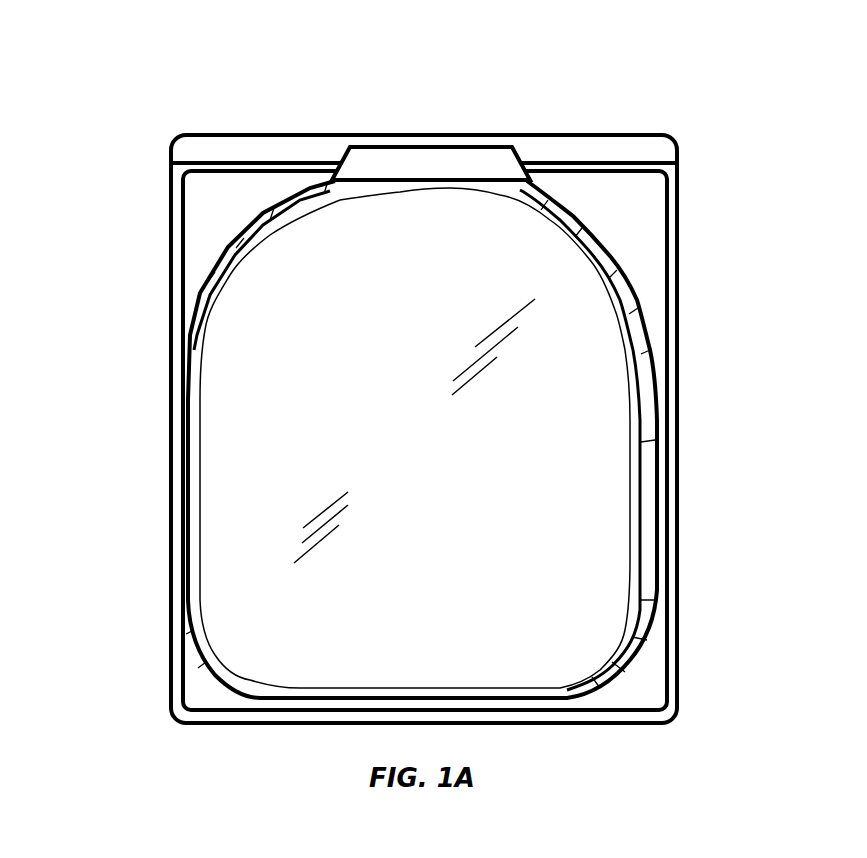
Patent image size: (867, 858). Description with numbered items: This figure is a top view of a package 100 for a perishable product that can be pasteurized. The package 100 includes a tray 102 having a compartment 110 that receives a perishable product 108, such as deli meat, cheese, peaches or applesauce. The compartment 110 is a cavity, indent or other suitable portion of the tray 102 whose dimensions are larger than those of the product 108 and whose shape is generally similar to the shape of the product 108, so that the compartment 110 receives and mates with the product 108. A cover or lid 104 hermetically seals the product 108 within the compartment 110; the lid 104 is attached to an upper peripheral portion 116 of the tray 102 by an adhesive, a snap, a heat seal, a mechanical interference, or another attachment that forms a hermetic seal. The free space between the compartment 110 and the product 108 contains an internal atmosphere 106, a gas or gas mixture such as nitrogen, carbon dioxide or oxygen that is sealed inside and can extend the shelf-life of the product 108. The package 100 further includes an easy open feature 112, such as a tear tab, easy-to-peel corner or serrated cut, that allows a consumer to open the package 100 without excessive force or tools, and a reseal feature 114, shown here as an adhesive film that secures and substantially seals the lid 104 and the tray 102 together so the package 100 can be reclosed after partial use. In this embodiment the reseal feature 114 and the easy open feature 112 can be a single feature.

The package 100 is at (597, 108).
The tray 102 is at (169, 158).
The lid 104 is at (222, 228).
The internal atmosphere 106 is at (229, 668).
The perishable product 108 is at (566, 360).
The compartment 110 is at (605, 252).
The easy open feature 112 is at (368, 145).
The reseal feature 114 is at (480, 145).
The upper peripheral portion 116 is at (633, 203).